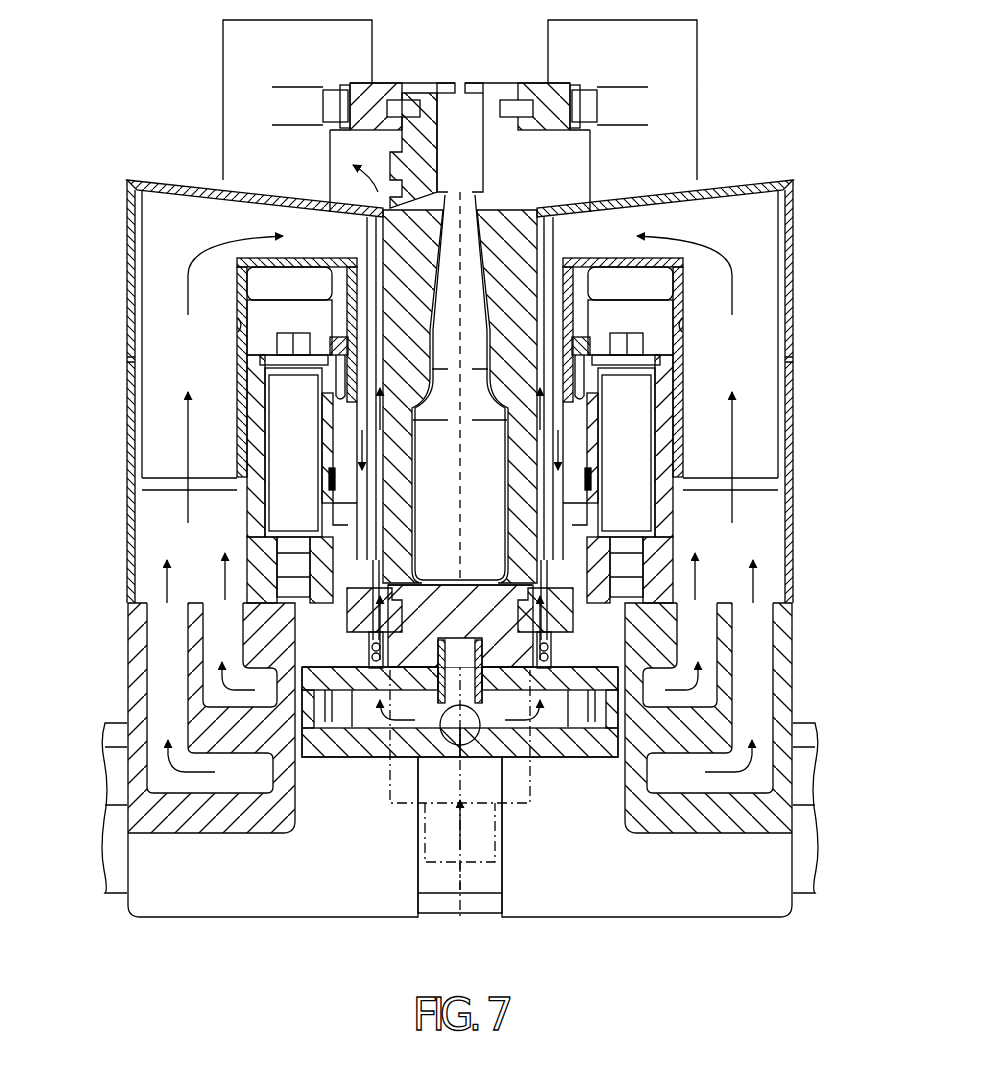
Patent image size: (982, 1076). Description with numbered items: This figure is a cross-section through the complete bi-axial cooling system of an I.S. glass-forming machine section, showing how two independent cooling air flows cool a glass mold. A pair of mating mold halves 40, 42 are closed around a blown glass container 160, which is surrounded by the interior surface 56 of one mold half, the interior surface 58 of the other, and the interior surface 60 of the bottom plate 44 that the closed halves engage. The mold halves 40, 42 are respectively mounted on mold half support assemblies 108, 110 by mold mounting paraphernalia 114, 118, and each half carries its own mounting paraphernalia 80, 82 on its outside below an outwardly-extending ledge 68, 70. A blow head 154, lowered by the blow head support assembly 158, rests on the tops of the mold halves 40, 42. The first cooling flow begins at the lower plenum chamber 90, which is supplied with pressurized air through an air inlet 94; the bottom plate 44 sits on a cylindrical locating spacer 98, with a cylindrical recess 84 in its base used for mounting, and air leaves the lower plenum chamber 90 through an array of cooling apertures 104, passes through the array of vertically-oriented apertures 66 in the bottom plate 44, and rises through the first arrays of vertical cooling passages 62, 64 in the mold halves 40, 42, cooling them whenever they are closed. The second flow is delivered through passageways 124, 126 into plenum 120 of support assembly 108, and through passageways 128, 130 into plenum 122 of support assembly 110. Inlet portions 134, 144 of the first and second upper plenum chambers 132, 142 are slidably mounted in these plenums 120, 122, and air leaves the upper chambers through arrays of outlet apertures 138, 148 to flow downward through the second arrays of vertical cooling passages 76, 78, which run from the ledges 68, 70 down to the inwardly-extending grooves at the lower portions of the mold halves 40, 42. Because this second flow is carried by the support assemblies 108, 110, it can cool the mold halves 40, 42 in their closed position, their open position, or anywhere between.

The blow head support assembly 158 is at (428, 80).
The blow head 154 is at (393, 195).
The bottom plate 44 is at (420, 577).
The blown glass container 160 is at (446, 462).
The second upper plenum chamber 142 is at (168, 175).
The first upper plenum chamber 132 is at (730, 178).
The inlet portion 144 is at (240, 340).
The inlet portion 134 is at (683, 340).
The mold half support assembly 110 is at (123, 493).
The mold half support assembly 108 is at (797, 493).
The plenum 122 is at (150, 578).
The plenum 120 is at (770, 578).
The outwardly-extending ledge 70 is at (364, 290).
The outwardly-extending ledge 68 is at (556, 290).
The array of outlet apertures 148 is at (365, 232).
The array of outlet apertures 138 is at (560, 235).
The second array of vertical cooling passages 78 is at (355, 292).
The second array of vertical cooling passages 76 is at (562, 292).
The mounting paraphernalia 82 is at (333, 325).
The mounting paraphernalia 80 is at (587, 325).
The mold mounting paraphernalia 118 is at (355, 458).
The mold mounting paraphernalia 114 is at (565, 458).
The interior surface 58 is at (330, 468).
The interior surface 56 is at (590, 472).
The mold half 42 is at (343, 520).
The mold half 40 is at (577, 520).
The first array of vertical cooling passages 64 is at (373, 225).
The first array of vertical cooling passages 62 is at (547, 225).
The array of vertically-oriented apertures 66 is at (373, 648).
The array of cooling apertures 104 is at (372, 670).
The cylindrical recess 84 is at (463, 657).
The interior surface 60 is at (458, 583).
The cylindrical locating spacer 98 is at (465, 650).
The lower plenum chamber 90 is at (368, 770).
The passageway 128 is at (217, 680).
The passageway 124 is at (705, 680).
The passageway 130 is at (160, 763).
The passageway 126 is at (762, 763).
The air inlet 94 is at (478, 862).